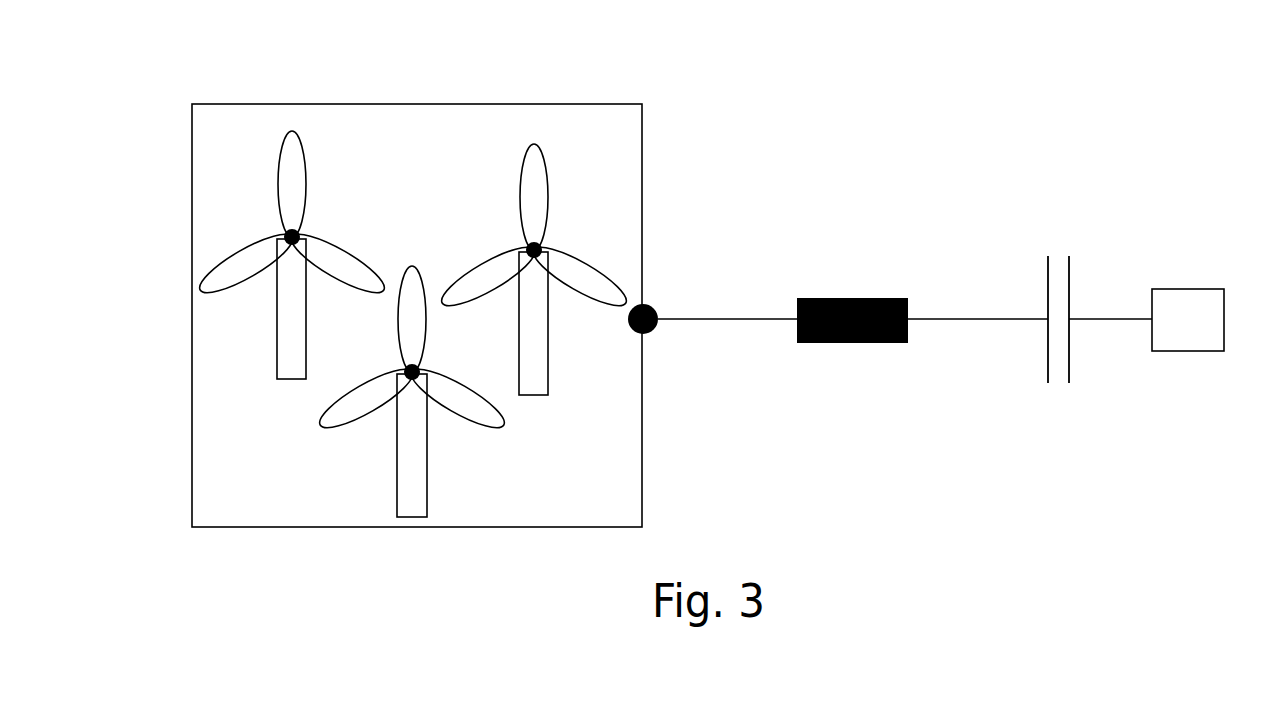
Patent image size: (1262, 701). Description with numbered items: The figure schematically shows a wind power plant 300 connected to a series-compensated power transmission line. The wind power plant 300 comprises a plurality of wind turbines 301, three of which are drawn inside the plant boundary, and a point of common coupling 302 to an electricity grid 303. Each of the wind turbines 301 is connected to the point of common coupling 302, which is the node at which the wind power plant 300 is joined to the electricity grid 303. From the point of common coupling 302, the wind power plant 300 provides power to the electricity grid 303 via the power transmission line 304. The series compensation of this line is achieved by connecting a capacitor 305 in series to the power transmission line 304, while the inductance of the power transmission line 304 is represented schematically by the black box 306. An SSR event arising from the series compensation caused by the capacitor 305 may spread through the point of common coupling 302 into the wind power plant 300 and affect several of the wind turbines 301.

The wind power plant 300 is at (290, 104).
The wind turbines 301 is at (216, 315).
The point of common coupling 302 is at (650, 304).
The electricity grid 303 is at (1193, 286).
The power transmission line 304 is at (958, 320).
The capacitor 305 is at (1071, 256).
The black box 306 is at (856, 294).